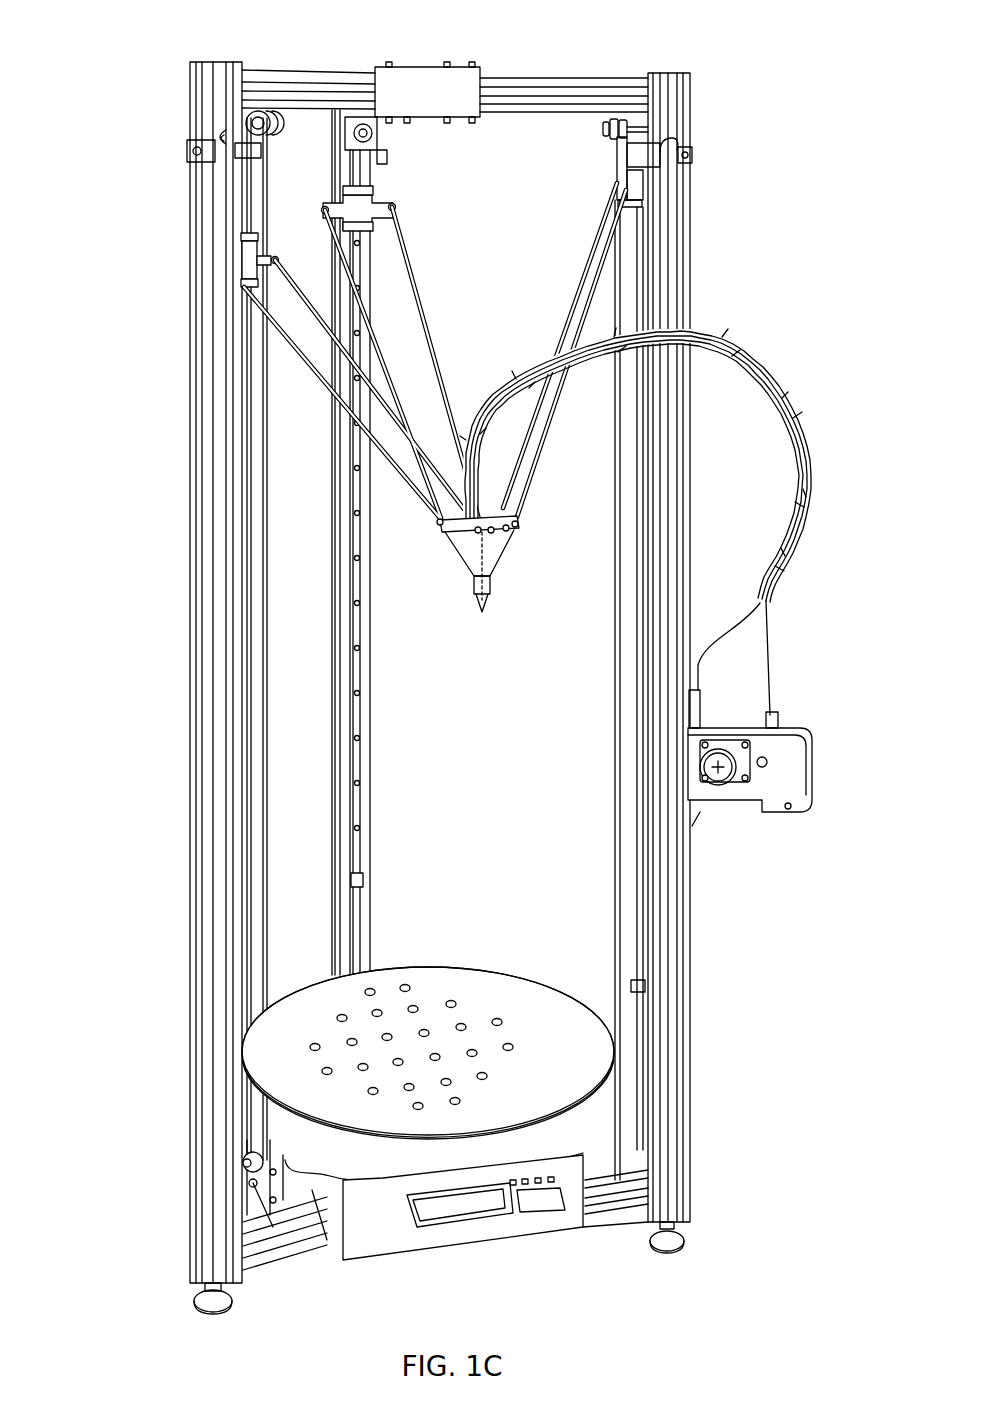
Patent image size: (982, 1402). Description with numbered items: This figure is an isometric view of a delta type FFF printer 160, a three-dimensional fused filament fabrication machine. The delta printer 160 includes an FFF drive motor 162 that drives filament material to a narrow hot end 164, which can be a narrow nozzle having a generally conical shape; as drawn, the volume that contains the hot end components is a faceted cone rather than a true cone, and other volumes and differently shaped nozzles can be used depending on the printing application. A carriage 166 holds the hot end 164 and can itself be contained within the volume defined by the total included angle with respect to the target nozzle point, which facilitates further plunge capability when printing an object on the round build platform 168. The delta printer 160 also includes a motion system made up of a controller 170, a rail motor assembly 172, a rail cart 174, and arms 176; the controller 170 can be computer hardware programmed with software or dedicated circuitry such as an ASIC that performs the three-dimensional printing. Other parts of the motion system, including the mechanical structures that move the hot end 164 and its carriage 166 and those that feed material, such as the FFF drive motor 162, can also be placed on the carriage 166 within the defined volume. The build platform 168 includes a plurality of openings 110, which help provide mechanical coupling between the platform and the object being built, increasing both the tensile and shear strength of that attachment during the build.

The delta type 3D FFF printer 160 is at (156, 67).
The FFF drive motor 162 is at (725, 778).
The narrow hot end 164 is at (482, 626).
The carriage 166 is at (516, 528).
The round build platform 168 is at (469, 962).
The controller 170 is at (523, 1220).
The rail motor assembly 172 is at (270, 1197).
The rail cart 174 is at (247, 260).
The arms 176 is at (300, 352).
The openings 110 is at (508, 1052).